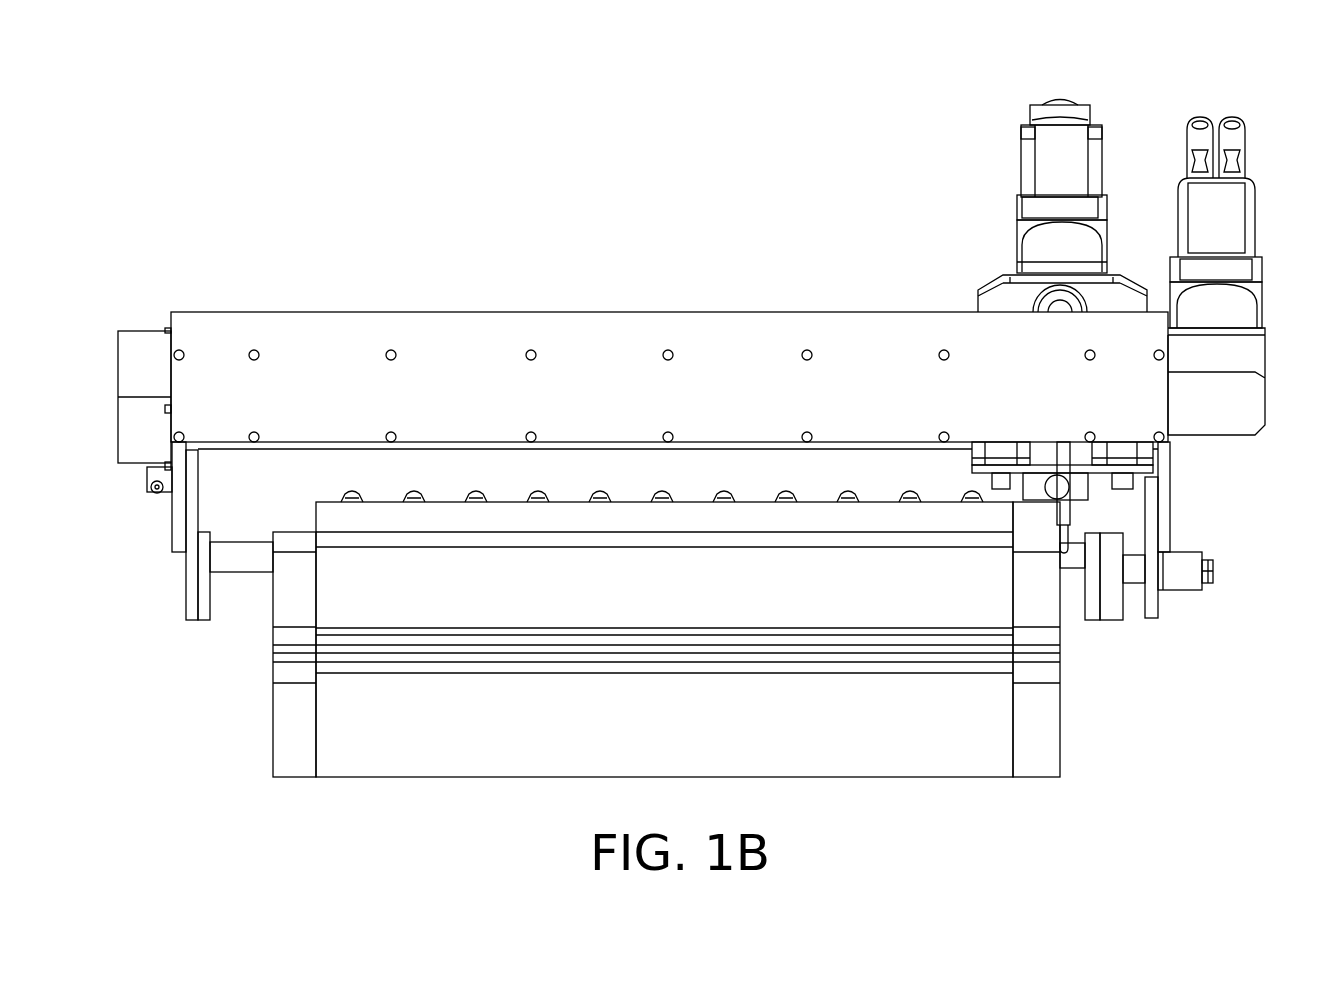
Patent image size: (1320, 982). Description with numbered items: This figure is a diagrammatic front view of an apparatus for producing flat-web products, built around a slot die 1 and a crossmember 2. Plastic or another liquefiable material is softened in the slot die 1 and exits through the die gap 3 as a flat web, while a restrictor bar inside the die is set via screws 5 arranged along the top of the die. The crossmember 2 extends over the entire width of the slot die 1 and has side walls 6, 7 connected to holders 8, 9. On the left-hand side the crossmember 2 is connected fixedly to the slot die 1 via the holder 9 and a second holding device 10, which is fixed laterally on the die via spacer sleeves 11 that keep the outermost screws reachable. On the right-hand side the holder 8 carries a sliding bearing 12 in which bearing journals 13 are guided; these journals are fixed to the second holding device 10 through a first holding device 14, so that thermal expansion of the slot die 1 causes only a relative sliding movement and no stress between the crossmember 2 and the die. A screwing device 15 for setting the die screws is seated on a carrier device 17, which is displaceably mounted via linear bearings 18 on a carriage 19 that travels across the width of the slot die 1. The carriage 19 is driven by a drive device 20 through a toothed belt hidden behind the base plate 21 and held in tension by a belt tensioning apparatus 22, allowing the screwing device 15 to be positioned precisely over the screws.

The slot die 1 is at (370, 778).
The crossmember 2 is at (348, 312).
The die gap 3 is at (205, 607).
The screws 5 is at (478, 498).
The side wall 6 is at (1170, 496).
The side wall 7 is at (178, 528).
The holder 8 is at (1152, 612).
The holder 9 is at (192, 592).
The second holding device 10 is at (1113, 605).
The spacer sleeves 11 is at (248, 560).
The sliding bearing 12 is at (1187, 580).
The bearing journals 13 is at (1210, 567).
The first holding device 14 is at (1093, 605).
The screwing device 15 is at (1060, 98).
The carrier device 17 is at (975, 272).
The linear bearings 18 is at (977, 447).
The carriage 19 is at (977, 465).
The drive device 20 is at (1222, 226).
The base plate 21 is at (493, 352).
The belt tensioning apparatus 22 is at (138, 350).